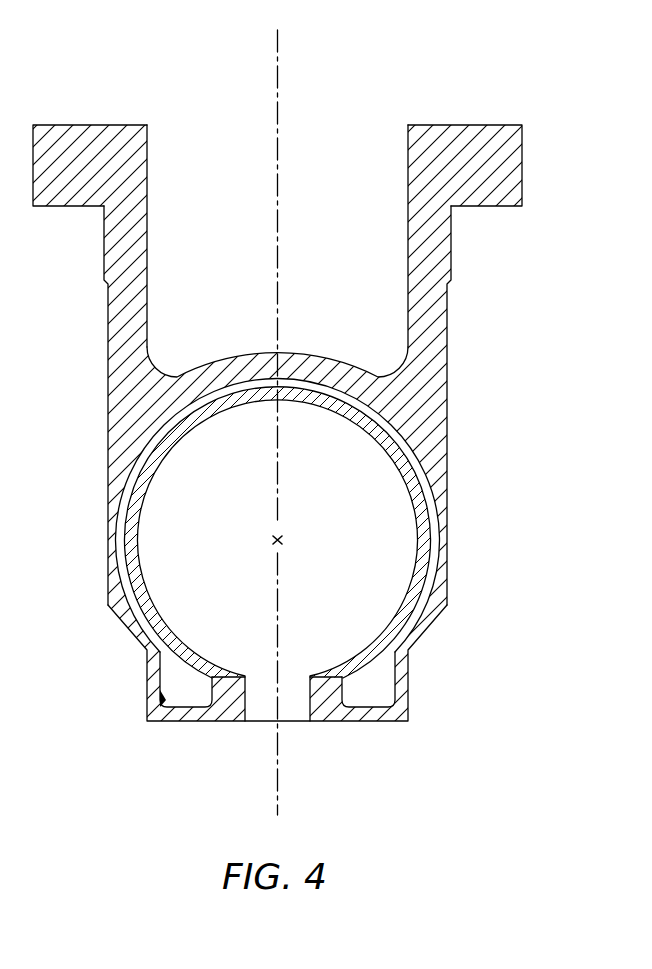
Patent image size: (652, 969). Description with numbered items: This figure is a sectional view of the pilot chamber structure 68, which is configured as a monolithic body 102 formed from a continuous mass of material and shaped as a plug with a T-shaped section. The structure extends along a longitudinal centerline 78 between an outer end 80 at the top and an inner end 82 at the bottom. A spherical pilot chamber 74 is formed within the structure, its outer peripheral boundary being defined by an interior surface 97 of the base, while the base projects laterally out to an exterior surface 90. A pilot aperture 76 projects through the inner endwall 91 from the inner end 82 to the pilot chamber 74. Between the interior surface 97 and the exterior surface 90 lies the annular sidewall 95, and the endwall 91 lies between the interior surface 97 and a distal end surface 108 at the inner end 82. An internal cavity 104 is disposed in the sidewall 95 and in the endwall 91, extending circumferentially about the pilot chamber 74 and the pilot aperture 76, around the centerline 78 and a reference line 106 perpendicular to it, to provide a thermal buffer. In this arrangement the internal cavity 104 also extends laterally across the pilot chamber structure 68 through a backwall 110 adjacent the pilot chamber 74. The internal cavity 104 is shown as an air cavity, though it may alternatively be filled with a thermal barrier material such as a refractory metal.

The pilot chamber structure 68 is at (314, 413).
The monolithic body 102 is at (314, 413).
The pilot chamber 74 is at (358, 574).
The pilot aperture 76 is at (262, 703).
The longitudinal centerline 78 is at (273, 58).
The outer end 80 is at (446, 124).
The inner end 82 is at (313, 689).
The distal end surface 108 is at (393, 722).
The exterior surface 90 is at (112, 522).
The inner endwall 91 is at (215, 695).
The annular sidewall 95 is at (120, 462).
The interior surface 97 is at (132, 530).
The internal cavity 104 is at (160, 700).
The reference line 106 is at (273, 538).
The backwall 110 is at (296, 360).